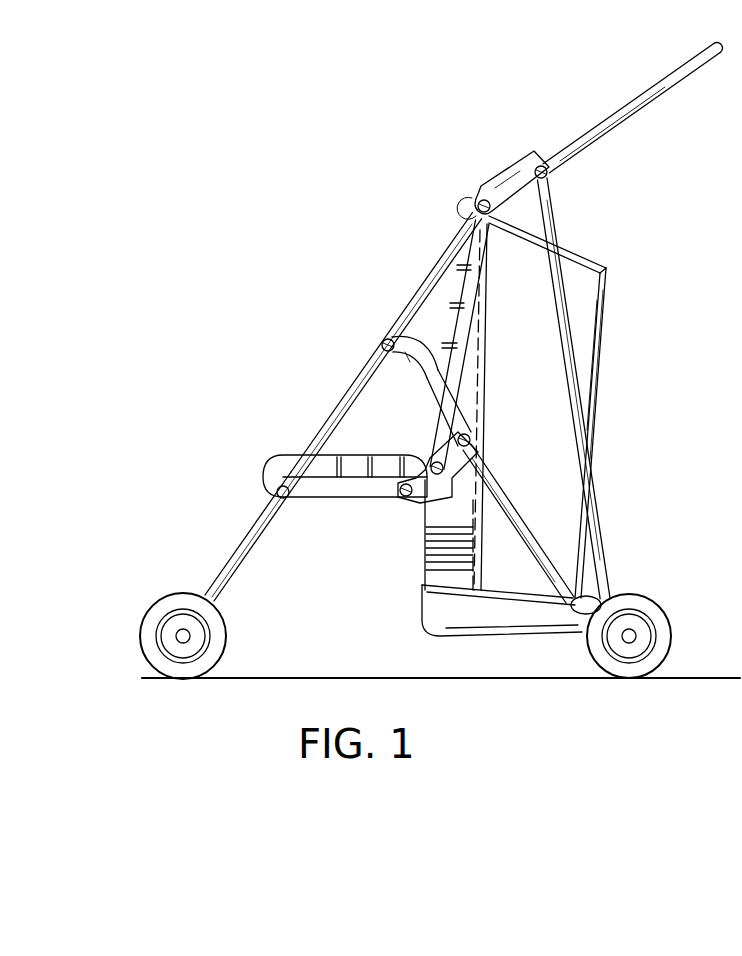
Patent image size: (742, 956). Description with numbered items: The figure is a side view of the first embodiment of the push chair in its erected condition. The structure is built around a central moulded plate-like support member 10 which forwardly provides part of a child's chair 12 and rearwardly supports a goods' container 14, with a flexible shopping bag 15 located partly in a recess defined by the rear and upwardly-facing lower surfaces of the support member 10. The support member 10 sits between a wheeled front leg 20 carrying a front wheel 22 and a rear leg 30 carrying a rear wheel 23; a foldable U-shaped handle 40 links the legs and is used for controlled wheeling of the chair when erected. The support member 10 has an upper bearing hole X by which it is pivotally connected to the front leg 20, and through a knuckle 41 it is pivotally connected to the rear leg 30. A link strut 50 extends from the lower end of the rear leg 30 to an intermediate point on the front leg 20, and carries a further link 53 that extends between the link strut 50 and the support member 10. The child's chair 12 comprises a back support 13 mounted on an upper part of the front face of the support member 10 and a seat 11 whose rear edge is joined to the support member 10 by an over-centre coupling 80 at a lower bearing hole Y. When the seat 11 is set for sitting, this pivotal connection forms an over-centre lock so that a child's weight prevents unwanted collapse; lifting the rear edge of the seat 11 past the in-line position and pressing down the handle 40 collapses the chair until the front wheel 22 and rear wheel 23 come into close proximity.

The support member 10 is at (473, 285).
The seat 11 is at (323, 487).
The child's chair 12 is at (326, 392).
The back support 13 is at (450, 323).
The goods' container 14 is at (606, 233).
The flexible shopping bag 15 is at (588, 308).
The front leg 20 is at (240, 546).
The front wheel 22 is at (226, 636).
The rear wheel 23 is at (660, 622).
The rear leg 30 is at (602, 513).
The U-shaped handle 40 is at (605, 108).
The knuckle 41 is at (503, 167).
The link strut 50 is at (503, 506).
The further link 53 is at (432, 448).
The over-centre coupling 80 is at (422, 497).
The upper bearing holes X is at (473, 197).
The lower bearing holes Y is at (473, 468).